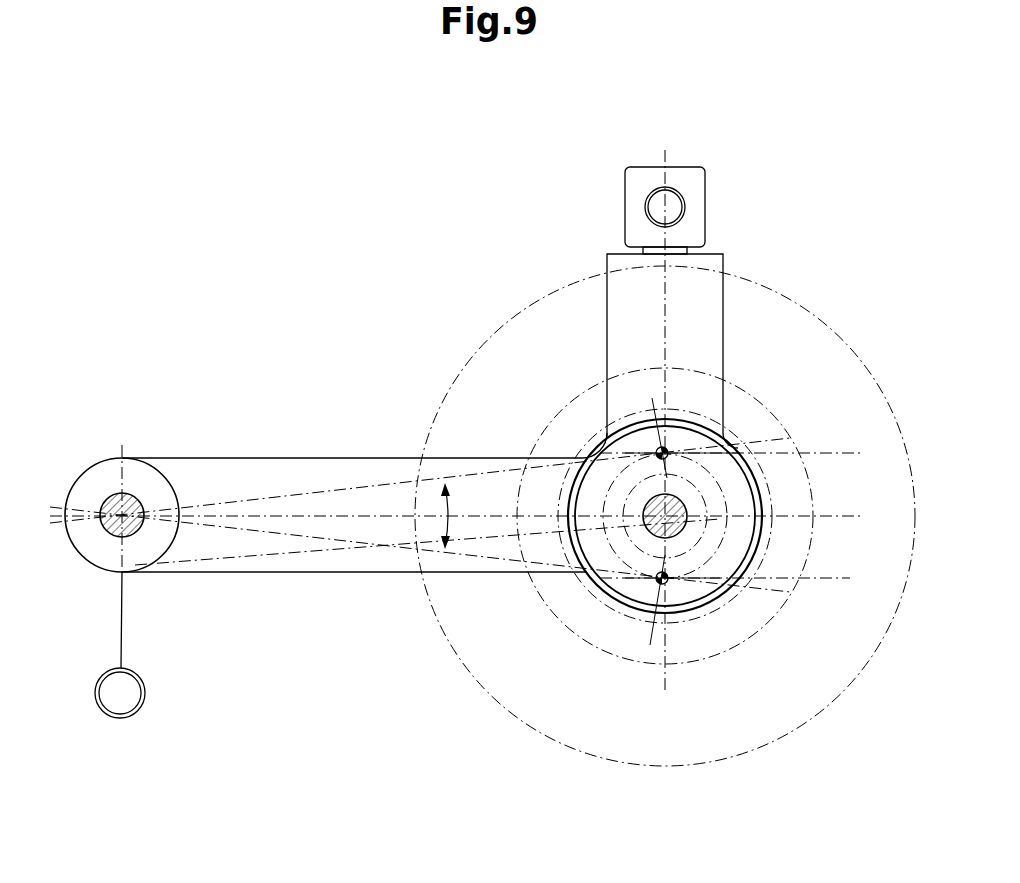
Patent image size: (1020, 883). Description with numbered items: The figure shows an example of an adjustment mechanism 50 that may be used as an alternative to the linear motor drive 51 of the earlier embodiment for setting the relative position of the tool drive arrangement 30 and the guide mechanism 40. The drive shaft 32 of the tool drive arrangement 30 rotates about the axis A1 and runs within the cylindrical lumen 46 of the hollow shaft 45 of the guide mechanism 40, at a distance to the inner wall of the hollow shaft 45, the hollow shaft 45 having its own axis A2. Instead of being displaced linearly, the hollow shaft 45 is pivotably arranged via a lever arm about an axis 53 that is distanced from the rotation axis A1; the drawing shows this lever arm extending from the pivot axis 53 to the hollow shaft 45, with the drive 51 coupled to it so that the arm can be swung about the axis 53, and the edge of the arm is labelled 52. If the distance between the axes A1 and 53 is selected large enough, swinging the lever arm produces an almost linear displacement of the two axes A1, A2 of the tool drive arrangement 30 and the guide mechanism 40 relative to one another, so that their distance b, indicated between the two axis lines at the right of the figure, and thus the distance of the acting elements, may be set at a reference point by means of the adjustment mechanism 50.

The tool drive arrangement 30 is at (685, 542).
The drive shaft 32 is at (684, 521).
The guide mechanism 40 is at (590, 582).
The hollow shaft 45 is at (638, 607).
The cylindrical lumen 46 is at (623, 580).
The adjustment mechanism 50 is at (270, 455).
The drive 51 is at (106, 688).
The lower edge of arm 52 is at (296, 575).
The axis 53 is at (112, 497).
The axis of the drive shaft A1 is at (655, 508).
The axis of the hollow shaft A2 is at (657, 449).
The distance of the axes b is at (862, 453).